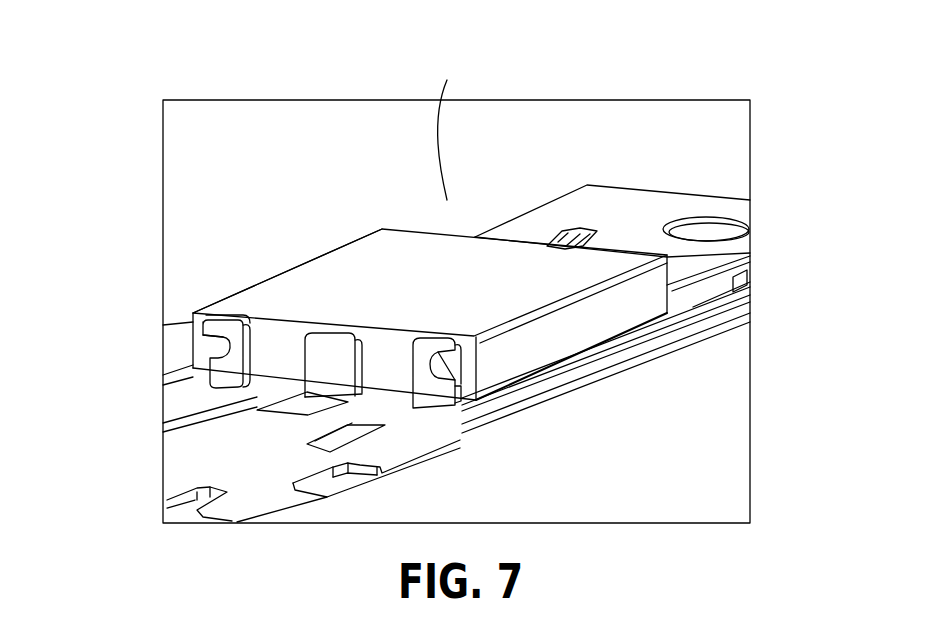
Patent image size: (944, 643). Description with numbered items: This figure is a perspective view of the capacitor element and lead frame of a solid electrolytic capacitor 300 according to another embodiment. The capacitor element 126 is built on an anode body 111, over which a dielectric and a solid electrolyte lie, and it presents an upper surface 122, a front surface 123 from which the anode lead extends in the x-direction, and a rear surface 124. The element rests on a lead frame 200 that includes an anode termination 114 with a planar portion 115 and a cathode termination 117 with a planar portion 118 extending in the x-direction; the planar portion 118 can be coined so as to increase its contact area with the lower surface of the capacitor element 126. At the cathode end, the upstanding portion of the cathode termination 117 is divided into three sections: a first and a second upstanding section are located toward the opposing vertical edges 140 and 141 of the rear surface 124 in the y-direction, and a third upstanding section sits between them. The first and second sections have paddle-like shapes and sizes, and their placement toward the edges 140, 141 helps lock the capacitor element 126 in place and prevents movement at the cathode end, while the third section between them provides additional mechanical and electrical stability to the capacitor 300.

The capacitor 300 is at (135, 153).
The anode body 111 is at (380, 261).
The upper surface 122 is at (497, 293).
The capacitor element 126 is at (449, 213).
The front surface 123 is at (610, 247).
The anode termination 114 is at (667, 290).
The planar portion 115 is at (640, 313).
The edge 140 is at (600, 380).
The edge 141 is at (193, 343).
The cathode termination 117 is at (435, 398).
The planar portion 118 is at (495, 388).
The rear surface 124 is at (276, 357).
The lead frame 200 is at (288, 453).